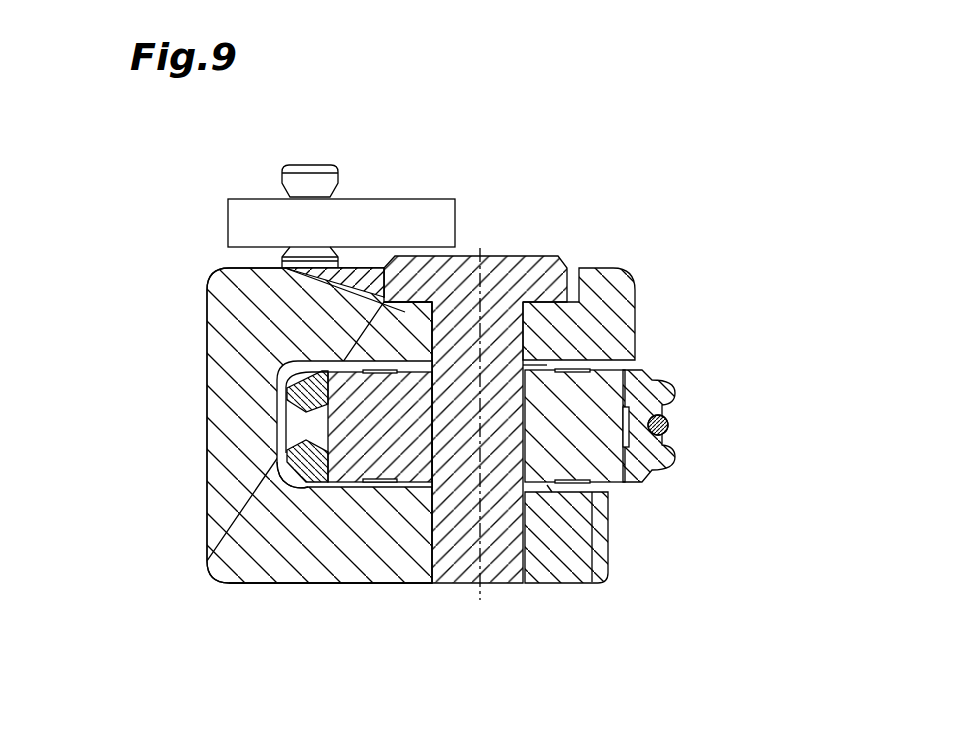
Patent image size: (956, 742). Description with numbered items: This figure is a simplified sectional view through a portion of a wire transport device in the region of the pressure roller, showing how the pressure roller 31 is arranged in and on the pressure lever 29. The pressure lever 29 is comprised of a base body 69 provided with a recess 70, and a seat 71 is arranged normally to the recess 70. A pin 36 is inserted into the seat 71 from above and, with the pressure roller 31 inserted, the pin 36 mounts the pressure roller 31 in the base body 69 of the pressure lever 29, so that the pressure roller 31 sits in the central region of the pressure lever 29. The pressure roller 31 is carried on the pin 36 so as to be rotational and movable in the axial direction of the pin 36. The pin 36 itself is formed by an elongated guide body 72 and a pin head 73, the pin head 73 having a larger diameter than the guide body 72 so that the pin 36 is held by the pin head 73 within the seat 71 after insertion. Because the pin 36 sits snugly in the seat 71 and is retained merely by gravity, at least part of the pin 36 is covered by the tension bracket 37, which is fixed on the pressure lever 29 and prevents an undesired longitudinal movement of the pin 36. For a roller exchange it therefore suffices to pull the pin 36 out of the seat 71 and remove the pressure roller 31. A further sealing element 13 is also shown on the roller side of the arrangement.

The pressure lever 29 is at (170, 247).
The tension bracket 37 is at (381, 232).
The pin head 73 is at (543, 283).
The pin 36 is at (563, 222).
The O-ring seal 13 is at (667, 425).
The pressure roller 31 is at (650, 487).
The base body 69 is at (240, 413).
The recess 70 is at (277, 464).
The seat 71 is at (423, 513).
The guide body 72 is at (500, 505).